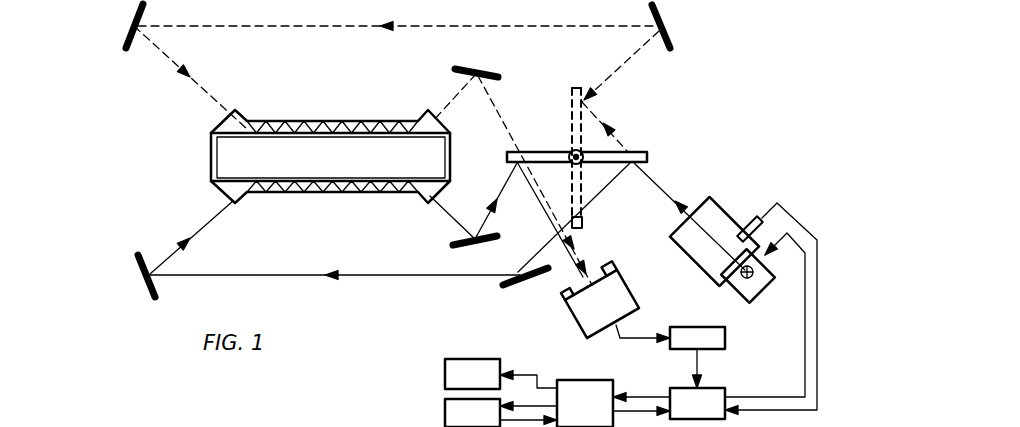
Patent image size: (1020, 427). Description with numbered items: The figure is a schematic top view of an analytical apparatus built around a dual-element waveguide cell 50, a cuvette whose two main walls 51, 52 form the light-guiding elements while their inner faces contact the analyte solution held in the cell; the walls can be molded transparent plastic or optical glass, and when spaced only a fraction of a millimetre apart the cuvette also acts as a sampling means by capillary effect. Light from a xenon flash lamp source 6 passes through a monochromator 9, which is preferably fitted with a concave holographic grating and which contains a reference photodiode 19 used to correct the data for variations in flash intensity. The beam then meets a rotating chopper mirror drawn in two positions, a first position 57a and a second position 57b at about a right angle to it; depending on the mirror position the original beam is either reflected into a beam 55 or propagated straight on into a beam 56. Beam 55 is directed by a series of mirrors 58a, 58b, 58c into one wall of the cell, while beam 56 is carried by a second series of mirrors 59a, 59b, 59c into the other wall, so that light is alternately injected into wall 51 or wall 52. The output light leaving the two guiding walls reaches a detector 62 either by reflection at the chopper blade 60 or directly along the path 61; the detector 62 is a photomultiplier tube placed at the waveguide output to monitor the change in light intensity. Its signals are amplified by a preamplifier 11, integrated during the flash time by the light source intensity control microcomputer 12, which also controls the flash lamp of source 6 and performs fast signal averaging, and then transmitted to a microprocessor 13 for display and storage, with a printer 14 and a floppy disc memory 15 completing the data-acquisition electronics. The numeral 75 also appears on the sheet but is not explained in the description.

The dual-element waveguide cell 50 is at (345, 166).
The main wall 51 is at (310, 194).
The main wall 52 is at (305, 121).
The beam 55 is at (598, 198).
The beam 56 is at (612, 126).
The rotating chopper mirror position 57a is at (648, 156).
The rotating chopper mirror position 57b is at (572, 122).
The mirror 58a is at (525, 287).
The mirror 58b is at (136, 265).
The mirror 58c is at (452, 243).
The mirror 59a is at (668, 33).
The mirror 59b is at (128, 36).
The mirror 59c is at (456, 74).
The chopper blade 60 is at (532, 204).
The direct output light path 61 is at (492, 120).
The detector 62 is at (616, 288).
The light source 6 is at (727, 292).
The monochromator 9 is at (710, 218).
The photodiode 19 is at (748, 220).
The preamplifier 11 is at (727, 337).
The light source with intensity control system 12 is at (720, 389).
The microprocessor 13 is at (584, 380).
The printer 14 is at (445, 373).
The memory 15 is at (445, 413).
The reference numeral 75 is at (183, 413).